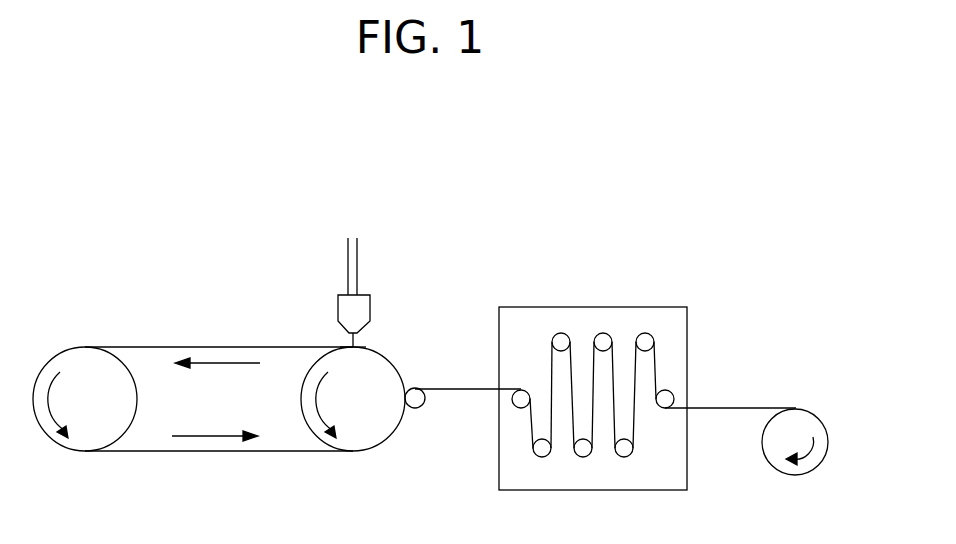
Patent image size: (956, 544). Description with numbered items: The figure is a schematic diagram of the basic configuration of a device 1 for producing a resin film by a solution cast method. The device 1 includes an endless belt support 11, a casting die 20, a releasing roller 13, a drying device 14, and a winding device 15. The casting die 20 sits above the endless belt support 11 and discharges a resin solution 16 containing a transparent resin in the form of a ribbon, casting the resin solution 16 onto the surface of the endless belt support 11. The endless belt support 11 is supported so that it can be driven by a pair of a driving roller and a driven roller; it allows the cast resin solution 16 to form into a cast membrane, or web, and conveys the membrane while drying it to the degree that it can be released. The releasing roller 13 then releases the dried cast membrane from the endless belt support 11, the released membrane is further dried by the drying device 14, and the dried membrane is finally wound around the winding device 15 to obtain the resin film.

The device for producing a resin film 1 is at (393, 174).
The endless belt support 11 is at (212, 346).
The releasing roller 13 is at (413, 388).
The drying device 14 is at (607, 307).
The winding device 15 is at (793, 408).
The resin solution 16 is at (351, 344).
The casting die 20 is at (358, 310).